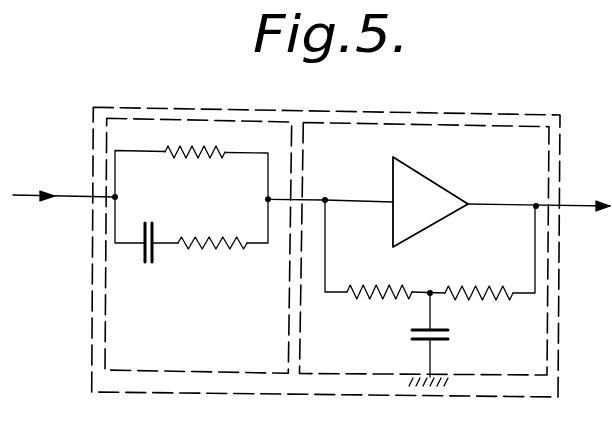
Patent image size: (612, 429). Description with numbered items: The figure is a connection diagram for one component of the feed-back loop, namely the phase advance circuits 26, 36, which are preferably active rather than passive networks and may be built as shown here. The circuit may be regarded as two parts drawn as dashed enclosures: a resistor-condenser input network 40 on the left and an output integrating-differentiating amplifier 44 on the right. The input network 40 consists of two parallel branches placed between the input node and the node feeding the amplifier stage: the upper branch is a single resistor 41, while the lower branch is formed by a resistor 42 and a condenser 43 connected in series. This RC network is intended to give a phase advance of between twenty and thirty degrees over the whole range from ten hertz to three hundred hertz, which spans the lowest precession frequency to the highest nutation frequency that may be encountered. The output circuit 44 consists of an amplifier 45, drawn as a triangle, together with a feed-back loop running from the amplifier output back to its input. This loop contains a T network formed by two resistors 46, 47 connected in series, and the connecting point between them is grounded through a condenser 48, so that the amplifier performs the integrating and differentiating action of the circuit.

The phase advance circuit 26 is at (326, 237).
The phase advance circuit 36 is at (442, 113).
The resistor-condenser input network 40 is at (101, 311).
The resistor 41 is at (205, 161).
The resistor 42 is at (212, 236).
The condenser 43 is at (157, 227).
The output integrating-differentiating amplifier 44 is at (550, 343).
The amplifier 45 is at (430, 202).
The resistor 46 is at (369, 288).
The resistor 47 is at (483, 287).
The condenser 48 is at (448, 333).